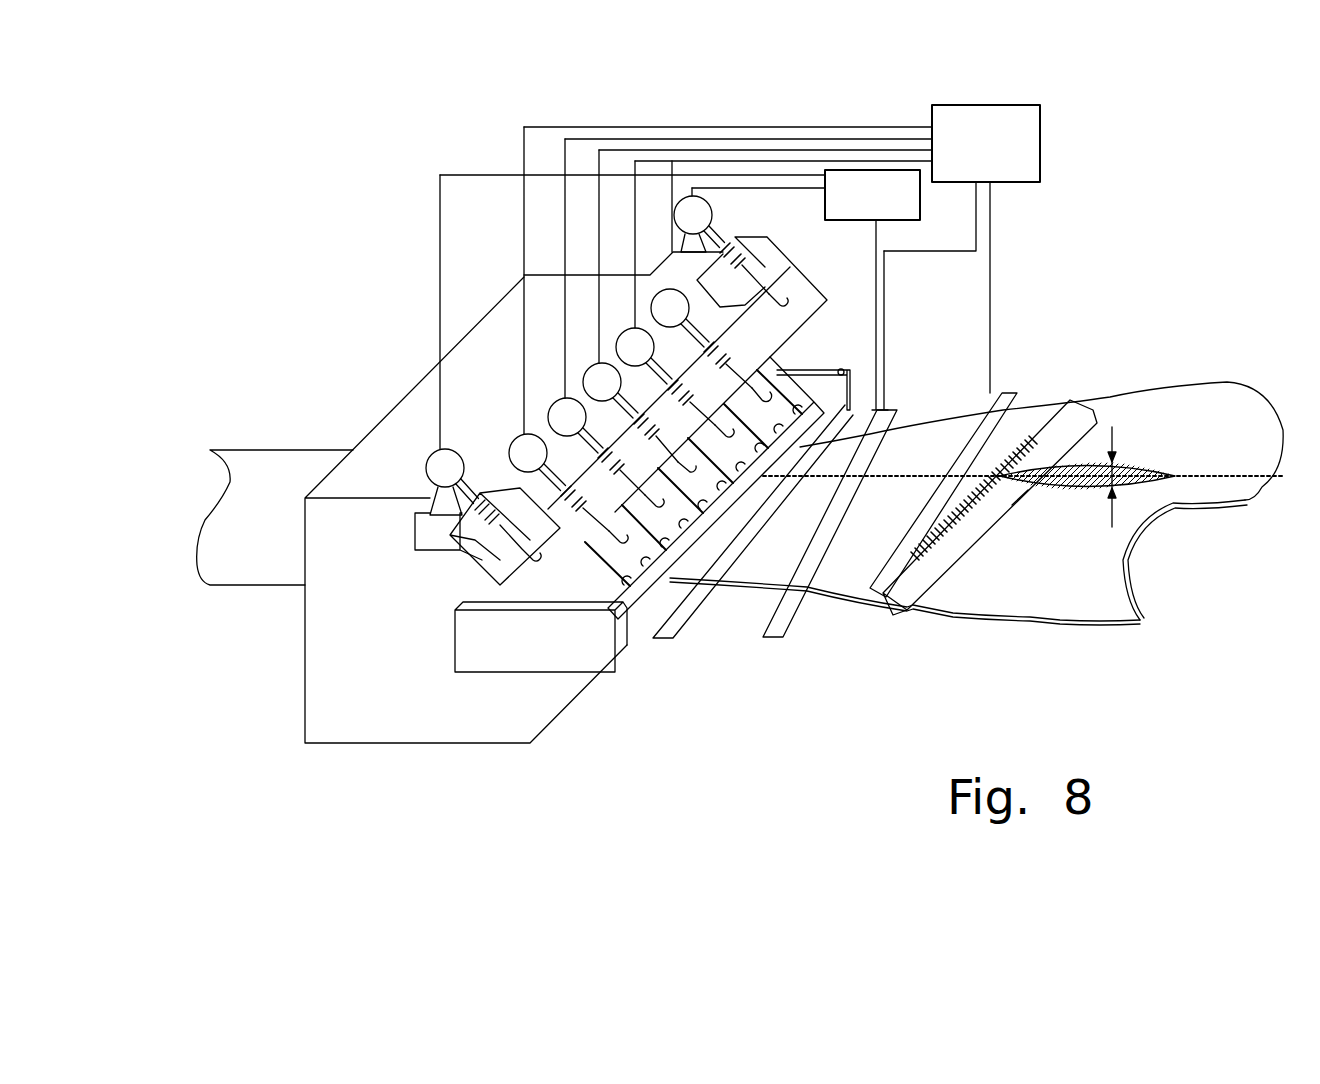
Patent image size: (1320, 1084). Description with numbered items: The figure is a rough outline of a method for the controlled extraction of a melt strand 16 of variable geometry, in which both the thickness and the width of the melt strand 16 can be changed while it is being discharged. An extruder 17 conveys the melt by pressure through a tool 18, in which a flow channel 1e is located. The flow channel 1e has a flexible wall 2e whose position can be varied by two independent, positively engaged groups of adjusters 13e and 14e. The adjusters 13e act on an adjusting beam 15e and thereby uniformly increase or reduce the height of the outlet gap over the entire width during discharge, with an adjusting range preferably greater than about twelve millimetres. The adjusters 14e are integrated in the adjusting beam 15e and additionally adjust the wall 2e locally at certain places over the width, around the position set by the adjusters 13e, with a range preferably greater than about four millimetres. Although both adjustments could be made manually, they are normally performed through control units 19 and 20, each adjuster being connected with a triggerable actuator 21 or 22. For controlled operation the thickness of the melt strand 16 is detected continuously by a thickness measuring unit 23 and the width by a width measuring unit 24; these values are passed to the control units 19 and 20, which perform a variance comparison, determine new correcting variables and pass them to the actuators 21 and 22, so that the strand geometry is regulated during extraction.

The flow channel 1e is at (722, 515).
The flexible wall 2e is at (663, 597).
The adjusters 13e is at (480, 513).
The adjusters 14e is at (563, 487).
The adjusting beam 15e is at (500, 576).
The melt strand 16 is at (1180, 415).
The extruder 17 is at (262, 472).
The tool 18 is at (415, 407).
The control unit 19 is at (910, 203).
The control unit 20 is at (1033, 147).
The actuator 21 is at (432, 465).
The actuator 22 is at (562, 473).
The thickness measuring unit 23 is at (893, 407).
The width measuring unit 24 is at (1015, 390).